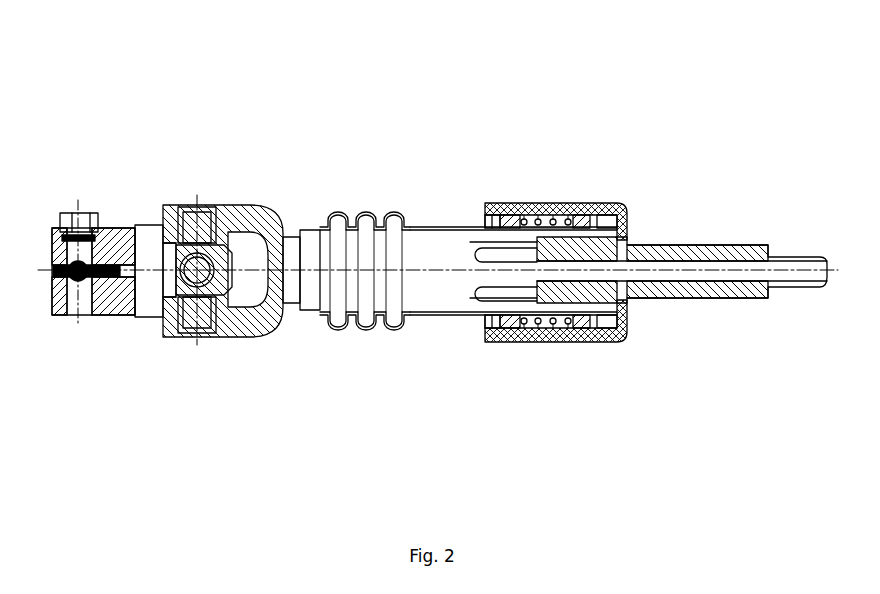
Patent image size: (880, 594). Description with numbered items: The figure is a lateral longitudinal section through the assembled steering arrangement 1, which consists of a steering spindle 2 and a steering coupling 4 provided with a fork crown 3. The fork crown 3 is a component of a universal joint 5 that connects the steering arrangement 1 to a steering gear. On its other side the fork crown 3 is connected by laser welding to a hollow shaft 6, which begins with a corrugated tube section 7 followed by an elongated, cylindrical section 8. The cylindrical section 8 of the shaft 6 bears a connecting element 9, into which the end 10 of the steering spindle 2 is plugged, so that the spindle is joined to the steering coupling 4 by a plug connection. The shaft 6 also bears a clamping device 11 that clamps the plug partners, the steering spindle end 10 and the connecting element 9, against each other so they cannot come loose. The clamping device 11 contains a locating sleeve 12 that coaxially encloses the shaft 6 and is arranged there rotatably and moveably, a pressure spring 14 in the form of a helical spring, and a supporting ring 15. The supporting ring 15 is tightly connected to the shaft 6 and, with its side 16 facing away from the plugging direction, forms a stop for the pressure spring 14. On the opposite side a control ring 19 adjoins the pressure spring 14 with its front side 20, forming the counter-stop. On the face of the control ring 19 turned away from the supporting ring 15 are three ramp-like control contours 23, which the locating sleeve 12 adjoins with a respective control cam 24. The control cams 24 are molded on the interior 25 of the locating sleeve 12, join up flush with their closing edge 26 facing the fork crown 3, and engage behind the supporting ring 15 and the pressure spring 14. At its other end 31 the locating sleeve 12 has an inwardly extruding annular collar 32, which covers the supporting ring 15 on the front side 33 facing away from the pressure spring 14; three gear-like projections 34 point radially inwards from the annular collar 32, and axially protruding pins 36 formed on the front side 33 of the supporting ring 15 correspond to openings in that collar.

The steering arrangement 1 is at (117, 130).
The steering spindle 2 is at (703, 242).
The fork crown 3 is at (230, 207).
The steering coupling 4 is at (368, 177).
The universal joint 5 is at (200, 203).
The hollow shaft 6 is at (432, 227).
The corrugated tube section 7 is at (330, 333).
The cylindrical section 8 is at (432, 315).
The connecting element 9 is at (493, 239).
The end of the steering spindle 10 is at (640, 318).
The clamping device 11 is at (577, 241).
The locating sleeve 12 is at (553, 200).
The pressure spring 14 is at (547, 333).
The supporting ring 15 is at (585, 203).
The side of the supporting ring 16 is at (563, 335).
The control ring 19 is at (510, 205).
The front side of the control ring 20 is at (532, 340).
The control contours 23 is at (492, 302).
The control cams 24 is at (485, 217).
The interior of the locating sleeve 25 is at (485, 325).
The closing edge 26 is at (492, 328).
The other end of the locating sleeve 31 is at (630, 207).
The annular collar 32 is at (622, 318).
The front side of the supporting ring 33 is at (608, 322).
The gear-like projections 34 is at (635, 217).
The pins 36 is at (613, 203).